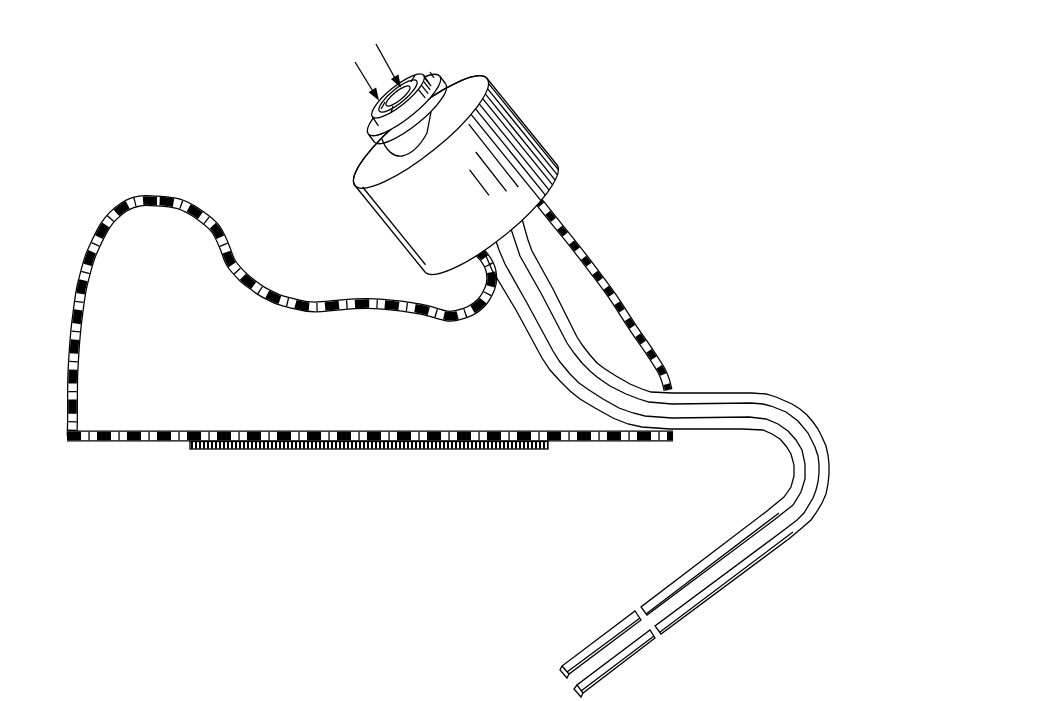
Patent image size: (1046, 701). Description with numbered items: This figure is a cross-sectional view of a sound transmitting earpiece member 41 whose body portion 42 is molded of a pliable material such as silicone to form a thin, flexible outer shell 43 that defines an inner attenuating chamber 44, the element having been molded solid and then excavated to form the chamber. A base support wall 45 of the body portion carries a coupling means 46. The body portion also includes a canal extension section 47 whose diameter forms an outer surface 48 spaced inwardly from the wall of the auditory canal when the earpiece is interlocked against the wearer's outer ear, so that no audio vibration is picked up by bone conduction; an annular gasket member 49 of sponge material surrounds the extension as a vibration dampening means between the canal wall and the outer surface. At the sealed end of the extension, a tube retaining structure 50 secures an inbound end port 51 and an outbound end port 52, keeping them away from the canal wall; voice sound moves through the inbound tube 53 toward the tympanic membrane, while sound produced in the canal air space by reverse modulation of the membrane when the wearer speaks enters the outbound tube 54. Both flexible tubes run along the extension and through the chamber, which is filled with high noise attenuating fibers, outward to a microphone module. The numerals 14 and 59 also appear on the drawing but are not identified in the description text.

The sound transmitting earpiece member 41 is at (158, 150).
The body portion 42 is at (221, 229).
The outer shell 43 is at (70, 287).
The inner attenuating chamber 44 is at (286, 376).
The base support wall 45 is at (121, 441).
The coupling means 46 is at (402, 450).
The canal extension section 47 is at (563, 200).
The outer surface 48 is at (380, 144).
The annular gasket member 49 is at (520, 137).
The tube retaining structure 50 is at (455, 64).
The inbound end port 51 is at (416, 86).
The outbound end port 52 is at (382, 112).
The inbound tube 53 is at (553, 294).
The outbound tube 54 is at (517, 304).
The insert 14 is at (404, 86).
The reference 59 is at (480, 697).